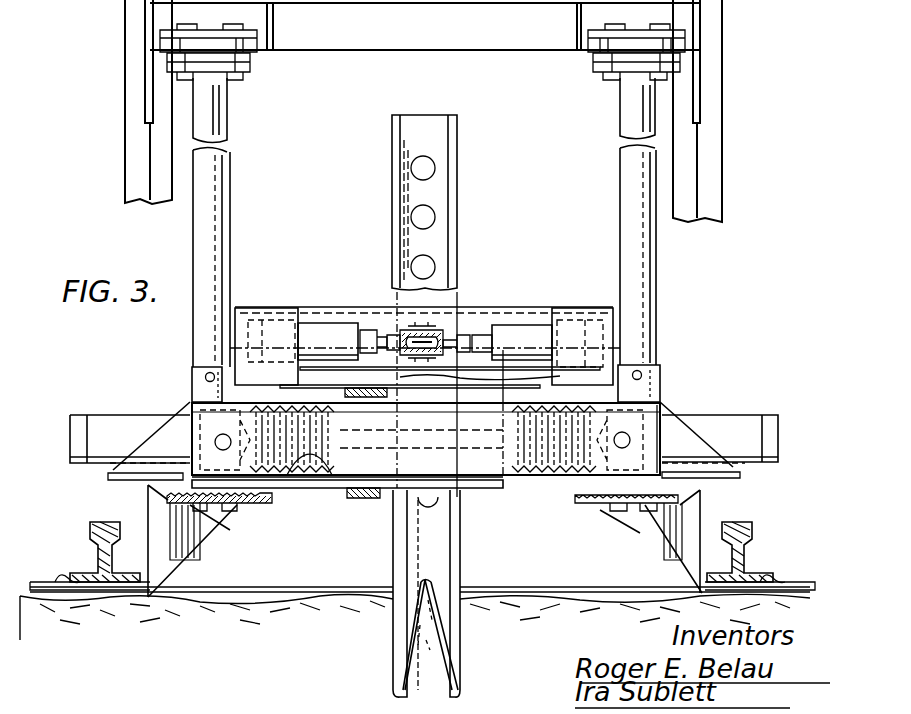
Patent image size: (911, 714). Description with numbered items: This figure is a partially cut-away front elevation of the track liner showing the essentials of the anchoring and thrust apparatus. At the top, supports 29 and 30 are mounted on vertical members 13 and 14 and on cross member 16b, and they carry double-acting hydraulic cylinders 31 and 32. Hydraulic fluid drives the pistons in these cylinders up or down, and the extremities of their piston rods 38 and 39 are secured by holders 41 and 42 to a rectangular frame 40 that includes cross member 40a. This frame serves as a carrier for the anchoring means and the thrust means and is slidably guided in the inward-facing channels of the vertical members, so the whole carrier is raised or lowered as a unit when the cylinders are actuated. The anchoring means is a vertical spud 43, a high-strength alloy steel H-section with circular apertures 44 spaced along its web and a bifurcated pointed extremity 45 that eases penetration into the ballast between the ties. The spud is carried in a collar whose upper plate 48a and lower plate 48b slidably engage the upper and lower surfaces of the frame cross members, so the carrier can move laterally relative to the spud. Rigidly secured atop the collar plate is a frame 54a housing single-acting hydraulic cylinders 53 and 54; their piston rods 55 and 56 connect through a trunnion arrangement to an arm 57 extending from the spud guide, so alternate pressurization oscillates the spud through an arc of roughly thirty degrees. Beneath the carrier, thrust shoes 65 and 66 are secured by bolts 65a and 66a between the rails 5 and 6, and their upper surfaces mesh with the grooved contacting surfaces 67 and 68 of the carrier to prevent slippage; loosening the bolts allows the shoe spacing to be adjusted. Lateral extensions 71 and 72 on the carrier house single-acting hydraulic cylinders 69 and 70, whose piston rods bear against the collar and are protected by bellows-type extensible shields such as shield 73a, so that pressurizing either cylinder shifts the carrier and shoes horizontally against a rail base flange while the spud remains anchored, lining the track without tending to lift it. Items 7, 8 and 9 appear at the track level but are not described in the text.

The rail 5 is at (750, 525).
The rail 6 is at (90, 525).
The tie plate 7 is at (58, 580).
The tie 8 is at (290, 592).
The ballast 9 is at (245, 616).
The vertical member 13 is at (124, 84).
The vertical member 14 is at (710, 78).
The cross member 16b is at (406, 50).
The support 29 is at (276, 32).
The support 30 is at (575, 35).
The double-acting hydraulic cylinder 31 is at (232, 128).
The double-acting hydraulic cylinder 32 is at (618, 152).
The piston rod 38 is at (222, 258).
The piston rod 39 is at (648, 264).
The rectangular frame 40 is at (490, 473).
The cross member 40a is at (658, 425).
The holder 41 is at (190, 376).
The holder 42 is at (660, 370).
The spud 43 is at (458, 127).
The circular apertures 44 is at (425, 265).
The bifurcated pointed extremity 45 is at (450, 664).
The upper plate 48a is at (345, 392).
The lower plate 48b is at (344, 500).
The single-acting hydraulic cylinder 53 is at (312, 324).
The single-acting hydraulic cylinder 54 is at (518, 330).
The frame 54a is at (266, 308).
The piston rod 55 is at (372, 330).
The piston rod 56 is at (466, 338).
The arm 57 is at (425, 338).
The thrust shoe 65 is at (212, 542).
The bolts 65a is at (232, 512).
The thrust shoe 66 is at (645, 530).
The bolts 66a is at (640, 514).
The contacting surface 67 is at (165, 496).
The contacting surface 68 is at (573, 497).
The single-acting hydraulic cylinder 69 is at (98, 416).
The single-acting hydraulic cylinder 70 is at (733, 418).
The lateral extension 71 is at (110, 480).
The lateral extension 72 is at (745, 475).
The bellows-type extensible shield 73a is at (370, 497).